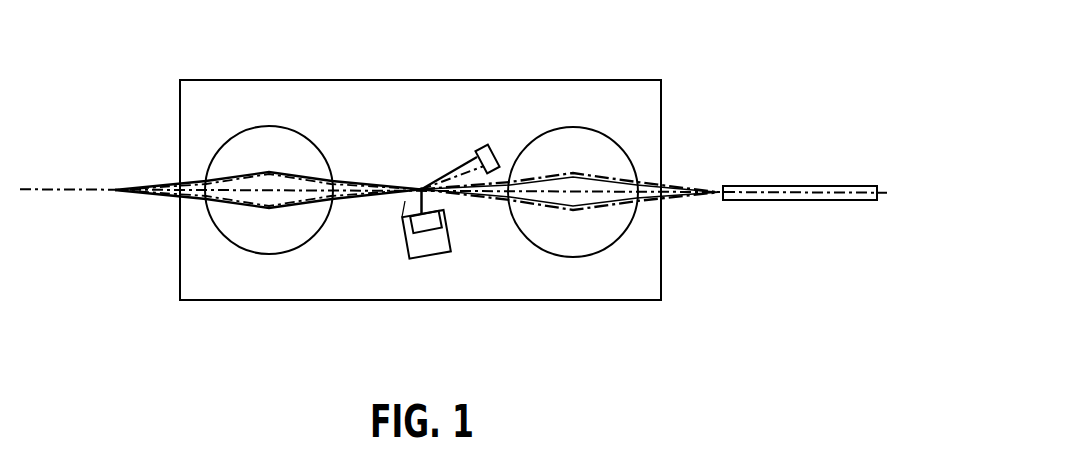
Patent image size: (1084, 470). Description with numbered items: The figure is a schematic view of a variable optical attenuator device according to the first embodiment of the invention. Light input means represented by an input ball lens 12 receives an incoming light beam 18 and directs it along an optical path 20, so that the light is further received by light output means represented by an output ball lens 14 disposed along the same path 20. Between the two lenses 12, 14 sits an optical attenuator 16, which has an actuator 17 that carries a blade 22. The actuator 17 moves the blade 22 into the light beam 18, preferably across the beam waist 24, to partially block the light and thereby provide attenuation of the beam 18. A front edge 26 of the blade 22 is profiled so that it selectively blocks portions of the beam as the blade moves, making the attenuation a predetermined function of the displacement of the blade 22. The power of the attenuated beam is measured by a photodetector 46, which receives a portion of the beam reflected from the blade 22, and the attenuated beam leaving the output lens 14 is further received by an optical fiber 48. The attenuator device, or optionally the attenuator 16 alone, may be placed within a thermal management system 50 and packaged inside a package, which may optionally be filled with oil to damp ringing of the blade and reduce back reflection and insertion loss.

The input ball lens 12 is at (268, 126).
The output ball lens 14 is at (571, 127).
The optical attenuator 16 is at (398, 268).
The actuator 17 is at (441, 221).
The light beam 18 is at (170, 200).
The optical path 20 is at (67, 188).
The blade 22 is at (405, 201).
The beam waist 24 is at (418, 188).
The front edge 26 is at (421, 187).
The photodetector 46 is at (489, 145).
The optical fiber 48 is at (782, 200).
The thermal management system 50 is at (661, 291).